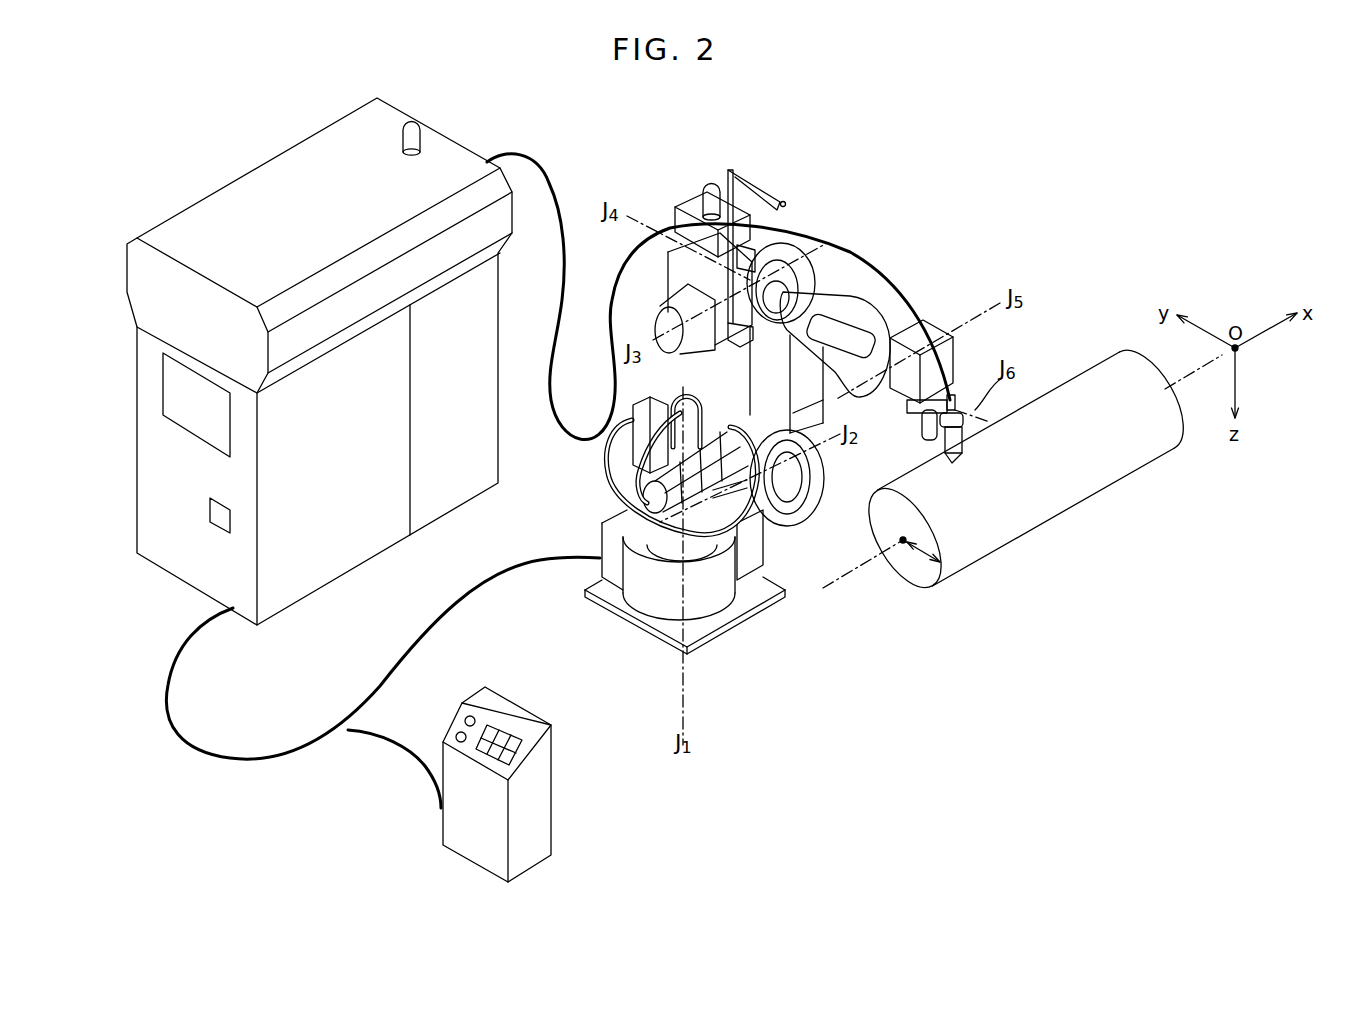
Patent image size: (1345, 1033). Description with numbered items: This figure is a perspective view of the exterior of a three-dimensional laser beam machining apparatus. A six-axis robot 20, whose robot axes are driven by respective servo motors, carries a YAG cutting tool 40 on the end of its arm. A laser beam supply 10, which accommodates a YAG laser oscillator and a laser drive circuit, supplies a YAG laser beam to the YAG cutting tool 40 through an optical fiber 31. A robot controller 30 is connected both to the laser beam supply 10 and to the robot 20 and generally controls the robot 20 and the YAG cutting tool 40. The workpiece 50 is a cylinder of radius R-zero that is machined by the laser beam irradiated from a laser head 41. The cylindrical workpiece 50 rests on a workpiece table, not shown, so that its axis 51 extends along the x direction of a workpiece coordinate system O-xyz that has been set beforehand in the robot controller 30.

The laser beam supply 10 is at (238, 167).
The robot 20 is at (635, 640).
The robot controller 30 is at (572, 793).
The optical fiber 31 is at (790, 212).
The YAG cutting tool 40 is at (918, 330).
The laser head 41 is at (957, 455).
The workpiece 50 is at (1152, 438).
The axis 51 is at (845, 593).